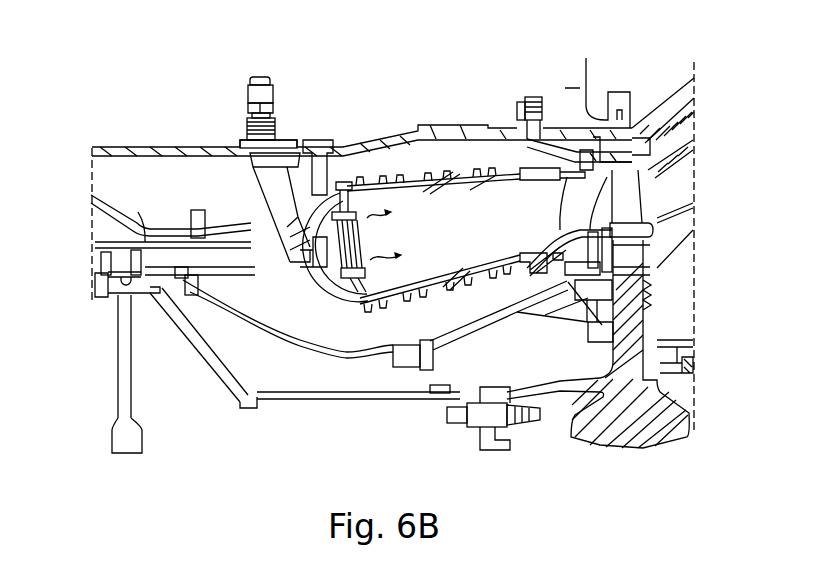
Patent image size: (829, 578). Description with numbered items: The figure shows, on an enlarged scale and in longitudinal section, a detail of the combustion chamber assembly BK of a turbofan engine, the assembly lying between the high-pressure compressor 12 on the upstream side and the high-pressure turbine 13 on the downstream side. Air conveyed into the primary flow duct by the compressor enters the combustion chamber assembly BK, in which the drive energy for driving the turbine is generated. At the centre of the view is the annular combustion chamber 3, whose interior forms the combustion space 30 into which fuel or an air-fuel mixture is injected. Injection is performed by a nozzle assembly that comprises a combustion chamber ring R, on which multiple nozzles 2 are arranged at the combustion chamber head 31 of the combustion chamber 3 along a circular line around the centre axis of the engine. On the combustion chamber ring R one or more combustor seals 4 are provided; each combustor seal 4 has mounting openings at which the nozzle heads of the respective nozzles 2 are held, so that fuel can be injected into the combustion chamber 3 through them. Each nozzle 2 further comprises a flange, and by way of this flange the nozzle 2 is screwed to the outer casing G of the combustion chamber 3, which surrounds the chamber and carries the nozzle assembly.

The outer casing G is at (187, 147).
The combustion chamber assembly BK is at (313, 92).
The nozzle 2 is at (289, 261).
The combustion chamber 3 is at (412, 176).
The combustor seal 4 is at (357, 190).
The high-pressure compressor 12 is at (98, 256).
The high-pressure turbine 13 is at (673, 180).
The combustion space 30 is at (422, 249).
The combustion chamber head 31 is at (336, 289).
The combustion chamber ring R is at (380, 292).